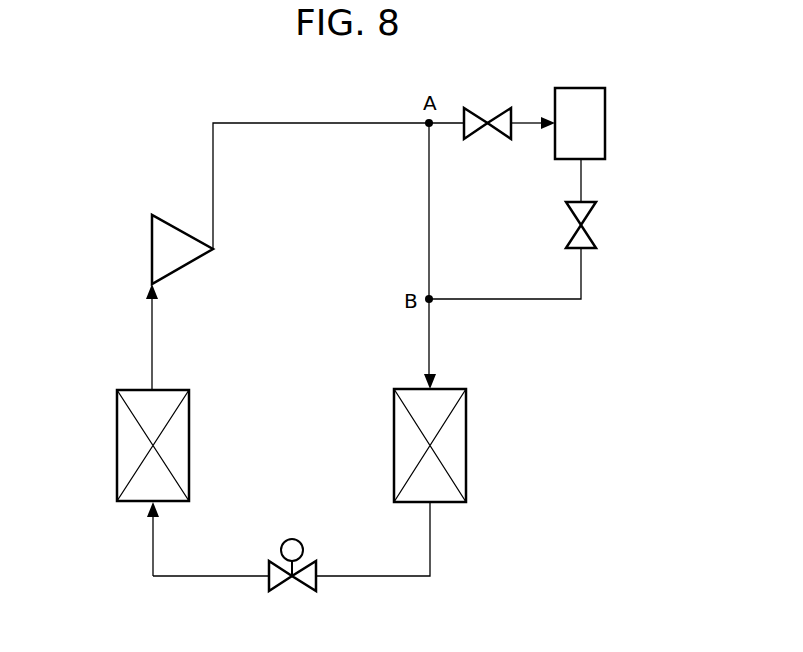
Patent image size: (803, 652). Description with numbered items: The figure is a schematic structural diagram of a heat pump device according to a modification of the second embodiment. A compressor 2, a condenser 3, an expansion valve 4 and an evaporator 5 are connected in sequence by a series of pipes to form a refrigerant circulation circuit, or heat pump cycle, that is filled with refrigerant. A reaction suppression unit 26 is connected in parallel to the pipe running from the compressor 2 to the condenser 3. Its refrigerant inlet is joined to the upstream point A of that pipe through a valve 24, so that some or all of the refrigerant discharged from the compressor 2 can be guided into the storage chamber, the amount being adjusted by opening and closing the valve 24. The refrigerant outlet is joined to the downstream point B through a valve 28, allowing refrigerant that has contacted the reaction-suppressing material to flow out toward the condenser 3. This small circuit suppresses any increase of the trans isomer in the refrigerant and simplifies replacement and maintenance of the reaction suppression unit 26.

The compressor 2 is at (152, 247).
The condenser 3 is at (467, 428).
The expansion valve 4 is at (300, 590).
The evaporator 5 is at (117, 449).
The valve 24 is at (477, 107).
The reaction suppression unit 26 is at (605, 125).
The valve 28 is at (590, 212).